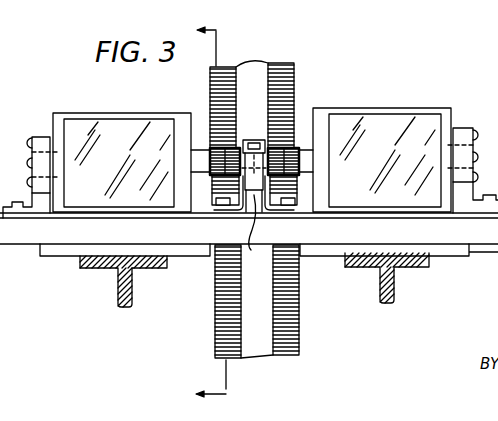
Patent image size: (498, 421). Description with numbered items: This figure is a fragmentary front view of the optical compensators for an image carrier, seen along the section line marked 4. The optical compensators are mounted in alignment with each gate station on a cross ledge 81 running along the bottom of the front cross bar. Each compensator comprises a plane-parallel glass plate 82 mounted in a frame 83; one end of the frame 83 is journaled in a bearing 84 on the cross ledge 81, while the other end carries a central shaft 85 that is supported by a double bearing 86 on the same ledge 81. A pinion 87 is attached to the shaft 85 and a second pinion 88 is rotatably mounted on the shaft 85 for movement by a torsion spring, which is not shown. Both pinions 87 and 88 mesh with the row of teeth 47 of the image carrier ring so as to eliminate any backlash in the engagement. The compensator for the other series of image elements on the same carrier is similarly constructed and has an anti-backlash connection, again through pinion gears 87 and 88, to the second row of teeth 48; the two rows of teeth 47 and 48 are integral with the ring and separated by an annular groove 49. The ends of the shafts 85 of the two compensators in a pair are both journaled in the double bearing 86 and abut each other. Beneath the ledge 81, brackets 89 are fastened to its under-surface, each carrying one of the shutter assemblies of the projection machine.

The section line 4- 4 is at (201, 210).
The row of teeth 47 is at (211, 67).
The row of teeth 48 is at (295, 65).
The annular groove 49 is at (257, 66).
The cross ledge 81 is at (22, 245).
The plane-parallel glass plate 82 is at (91, 127).
The frame 83 is at (137, 114).
The bearing 84 is at (32, 140).
The central shaft 85 is at (199, 150).
The double bearing 86 is at (259, 234).
The pinion 87 is at (210, 148).
The pinion 88 is at (262, 139).
The bracket 89 is at (118, 293).